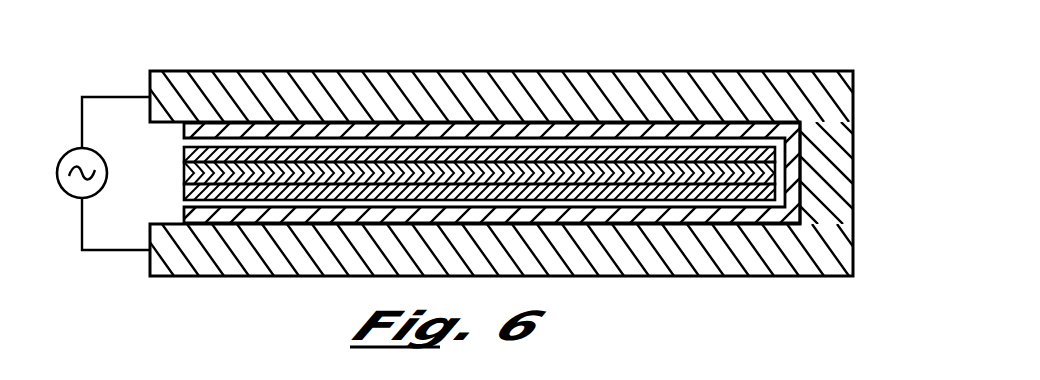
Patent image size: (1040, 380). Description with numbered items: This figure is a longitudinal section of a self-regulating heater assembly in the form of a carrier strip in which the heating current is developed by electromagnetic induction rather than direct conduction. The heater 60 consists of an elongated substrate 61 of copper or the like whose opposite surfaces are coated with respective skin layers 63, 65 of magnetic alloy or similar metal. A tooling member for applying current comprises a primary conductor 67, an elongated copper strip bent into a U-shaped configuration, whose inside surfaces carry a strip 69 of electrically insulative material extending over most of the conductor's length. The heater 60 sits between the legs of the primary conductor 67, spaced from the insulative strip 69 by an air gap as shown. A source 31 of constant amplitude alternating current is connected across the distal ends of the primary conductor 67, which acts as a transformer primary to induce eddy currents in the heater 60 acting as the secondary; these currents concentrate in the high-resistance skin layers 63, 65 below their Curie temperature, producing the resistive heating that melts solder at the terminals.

The source of constant amplitude alternating current 31 is at (63, 193).
The heater 60 is at (145, 146).
The substrate 61 is at (557, 172).
The skin layer 63 is at (702, 153).
The skin layer 65 is at (622, 190).
The primary conductor 67 is at (248, 85).
The strip of electrically insulative material 69 is at (286, 217).